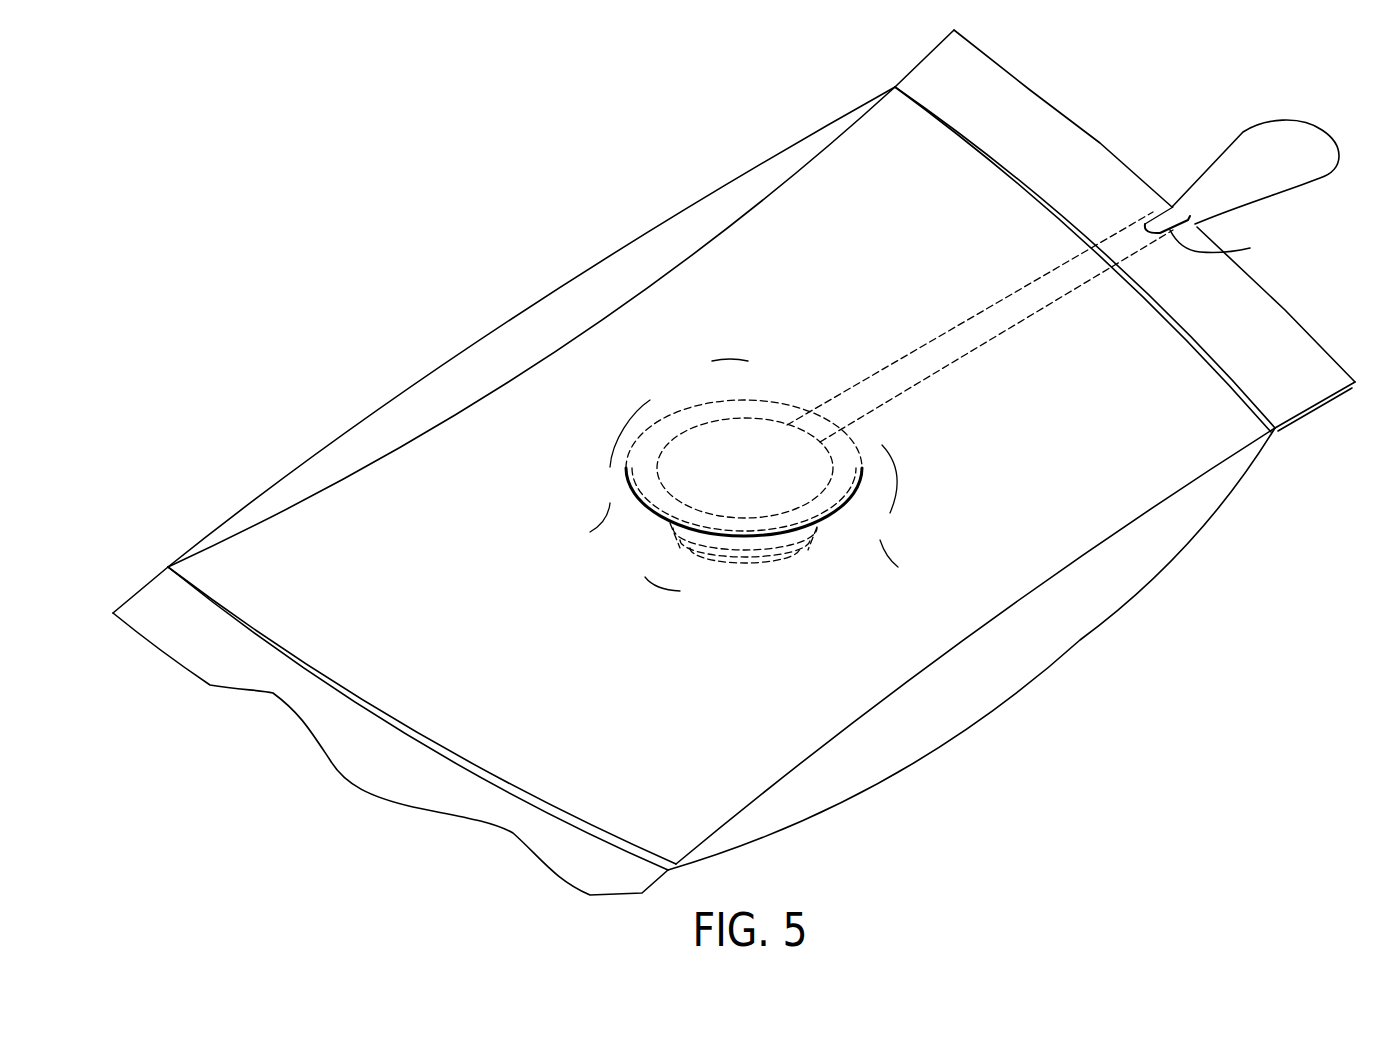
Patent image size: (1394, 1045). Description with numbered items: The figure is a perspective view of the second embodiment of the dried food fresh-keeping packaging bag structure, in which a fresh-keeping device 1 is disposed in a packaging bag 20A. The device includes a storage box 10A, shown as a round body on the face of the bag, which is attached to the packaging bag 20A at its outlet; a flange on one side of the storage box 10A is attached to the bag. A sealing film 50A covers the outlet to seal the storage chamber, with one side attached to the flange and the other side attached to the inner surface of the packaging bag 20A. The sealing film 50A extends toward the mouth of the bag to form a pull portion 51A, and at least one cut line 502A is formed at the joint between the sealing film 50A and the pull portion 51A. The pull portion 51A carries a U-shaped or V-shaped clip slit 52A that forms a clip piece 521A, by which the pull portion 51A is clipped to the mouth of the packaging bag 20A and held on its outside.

The fresh-keeping device 1 is at (255, 293).
The storage box 10A is at (780, 563).
The packaging bag 20A is at (1038, 590).
The sealing film 50A is at (703, 410).
The cut line 502A is at (795, 425).
The pull portion 51A is at (1243, 168).
The clip slit 52A is at (1197, 223).
The clip piece 521A is at (1220, 249).